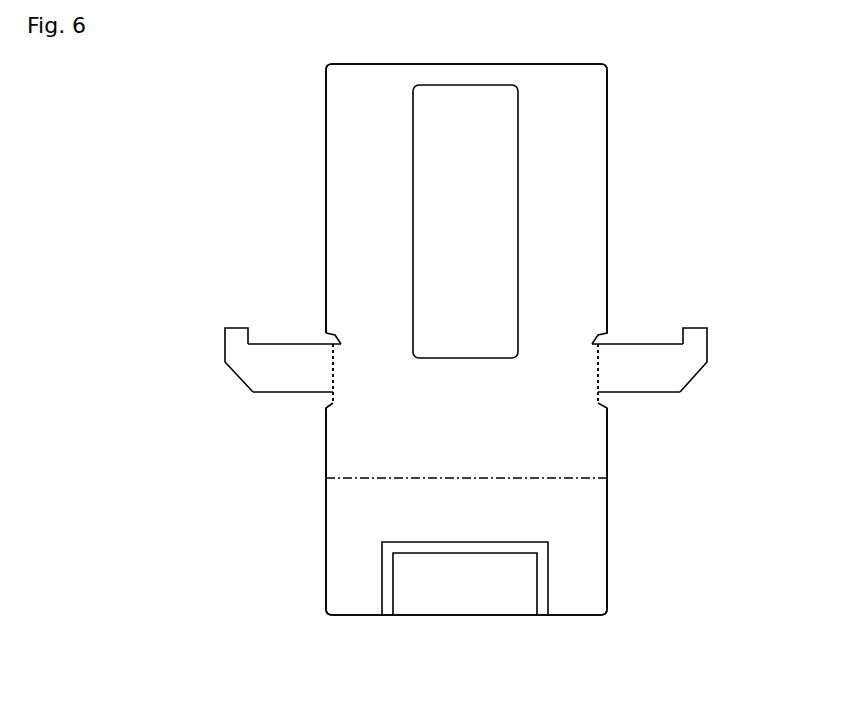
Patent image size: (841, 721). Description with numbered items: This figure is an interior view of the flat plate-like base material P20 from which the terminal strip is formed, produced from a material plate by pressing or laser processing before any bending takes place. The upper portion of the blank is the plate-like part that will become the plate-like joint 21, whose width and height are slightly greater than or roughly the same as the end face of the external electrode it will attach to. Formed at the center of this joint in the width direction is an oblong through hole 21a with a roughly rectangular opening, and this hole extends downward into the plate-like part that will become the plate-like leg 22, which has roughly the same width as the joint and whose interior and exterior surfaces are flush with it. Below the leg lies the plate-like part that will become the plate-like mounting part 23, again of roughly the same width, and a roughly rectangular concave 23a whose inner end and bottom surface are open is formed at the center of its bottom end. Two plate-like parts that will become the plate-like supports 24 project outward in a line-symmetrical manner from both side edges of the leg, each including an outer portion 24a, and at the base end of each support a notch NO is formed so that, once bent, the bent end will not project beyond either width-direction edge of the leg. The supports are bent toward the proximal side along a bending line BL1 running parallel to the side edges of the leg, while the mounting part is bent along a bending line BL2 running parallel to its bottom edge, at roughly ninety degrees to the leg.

The plate-like base material P20 is at (326, 126).
The plate-like joint 21 is at (365, 193).
The oblong through hole 21a is at (507, 216).
The plate-like leg 22 is at (348, 432).
The plate-like mounting part 23 is at (348, 573).
The concave 23a is at (462, 596).
The plate-like support 24 is at (287, 358).
The hook portion of tab 24a is at (236, 328).
The notch NO is at (333, 398).
The bending line BL1 is at (333, 368).
The bending line BL2 is at (385, 478).